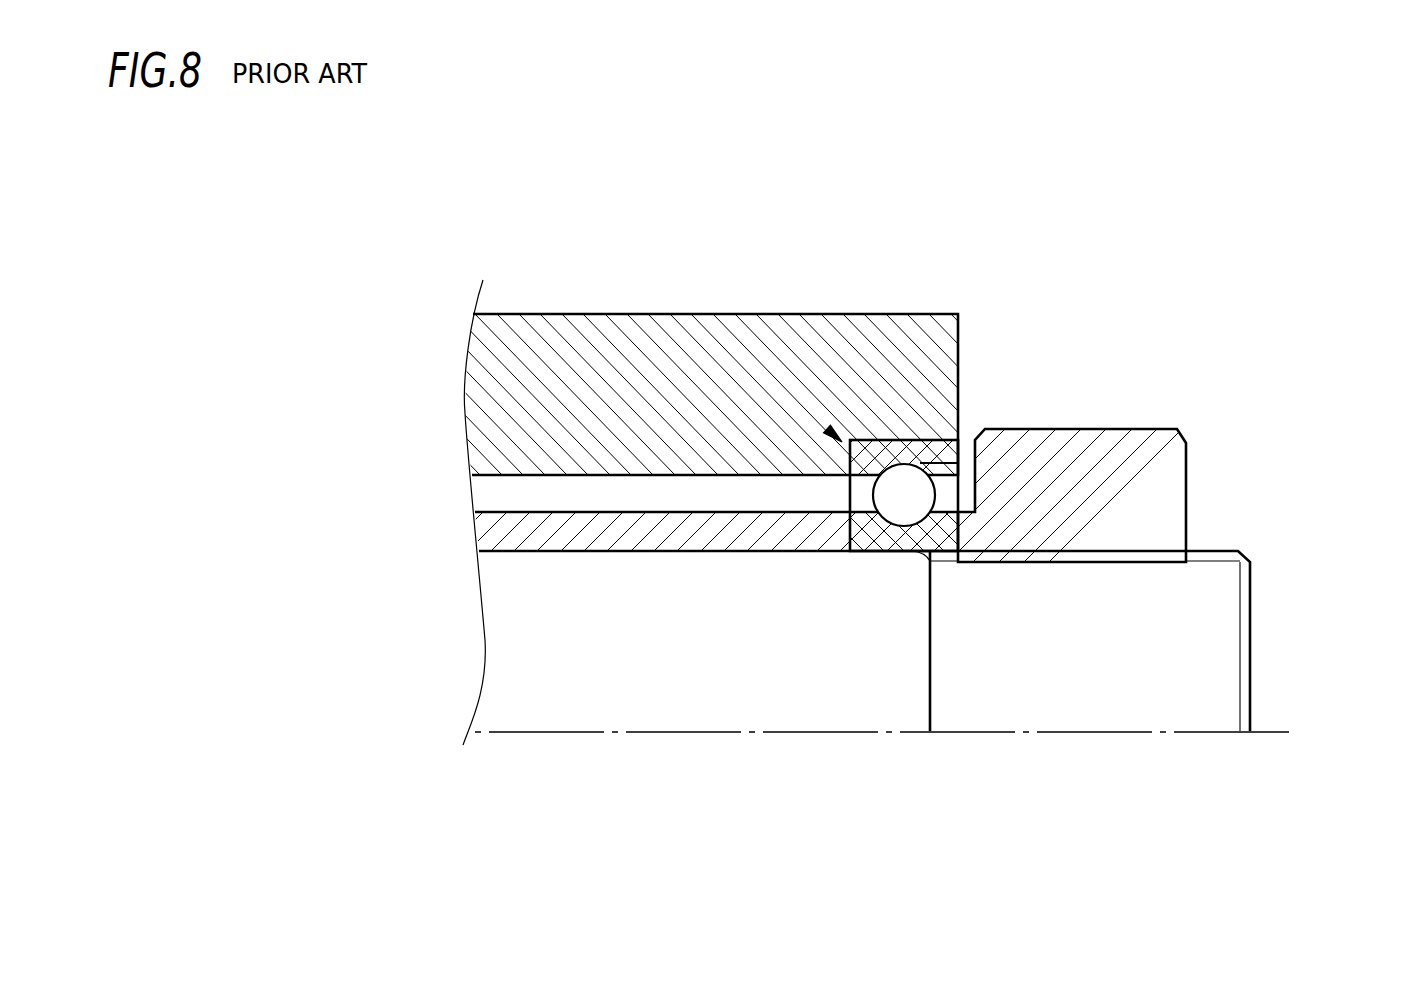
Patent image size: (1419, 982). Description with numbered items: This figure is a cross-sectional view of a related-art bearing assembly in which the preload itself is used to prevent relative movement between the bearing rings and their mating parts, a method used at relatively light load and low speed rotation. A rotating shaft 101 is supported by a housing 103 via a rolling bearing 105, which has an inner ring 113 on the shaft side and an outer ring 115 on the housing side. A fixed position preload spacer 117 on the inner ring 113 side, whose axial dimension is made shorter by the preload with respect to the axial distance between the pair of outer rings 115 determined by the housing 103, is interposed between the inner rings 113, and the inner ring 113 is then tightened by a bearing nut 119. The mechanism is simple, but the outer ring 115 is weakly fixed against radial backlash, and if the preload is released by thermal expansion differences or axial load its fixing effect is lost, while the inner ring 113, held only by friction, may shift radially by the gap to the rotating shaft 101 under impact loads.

The rotating shaft 101 is at (1252, 640).
The housing 103 is at (903, 313).
The rolling bearing 105 is at (830, 430).
The inner ring 113 is at (960, 540).
The outer ring 115 is at (928, 437).
The fixed position preload spacer 117 is at (480, 532).
The bearing nut 119 is at (1186, 467).